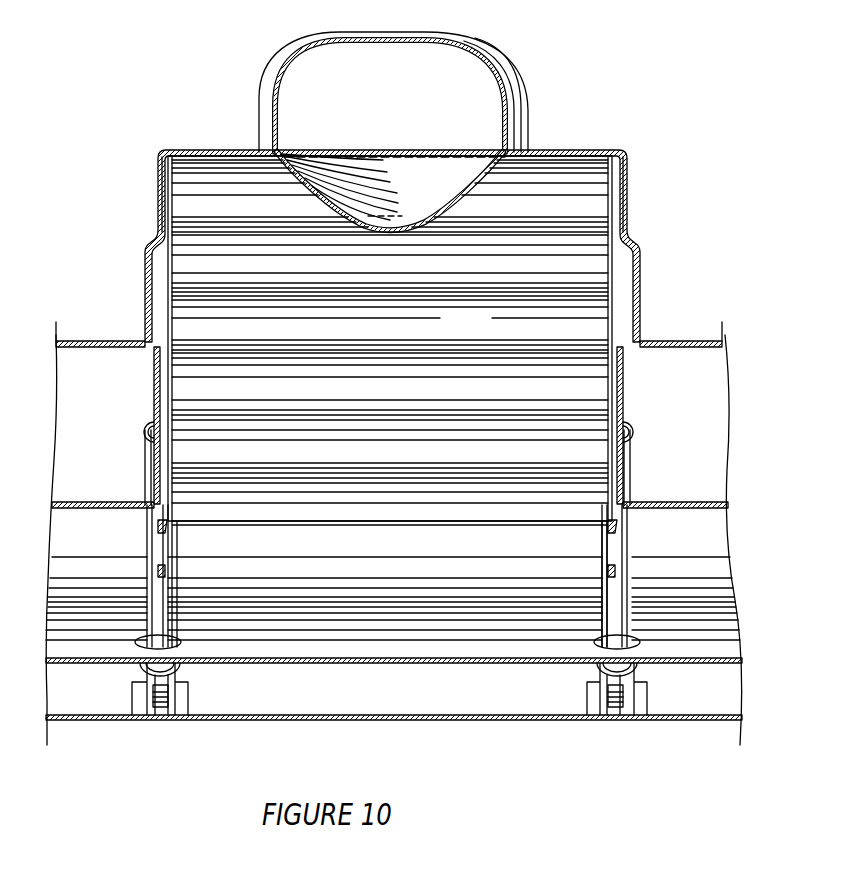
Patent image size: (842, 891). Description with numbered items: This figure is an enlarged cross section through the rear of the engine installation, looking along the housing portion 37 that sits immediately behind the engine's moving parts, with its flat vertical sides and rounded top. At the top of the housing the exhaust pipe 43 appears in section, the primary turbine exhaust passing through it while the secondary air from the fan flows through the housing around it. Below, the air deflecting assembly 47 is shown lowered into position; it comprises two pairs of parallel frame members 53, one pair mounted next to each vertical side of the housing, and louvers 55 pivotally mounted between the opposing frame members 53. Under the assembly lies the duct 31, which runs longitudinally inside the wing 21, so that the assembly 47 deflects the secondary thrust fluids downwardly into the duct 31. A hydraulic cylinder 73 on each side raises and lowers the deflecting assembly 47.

The wing 21 is at (230, 720).
The duct 31 is at (389, 552).
The housing portion 37 is at (502, 49).
The exhaust pipe 43 is at (387, 104).
The air deflecting assembly 47 is at (626, 152).
The frame members 53 is at (166, 180).
The louvers 55 is at (482, 331).
The hydraulic cylinder 73 is at (155, 535).